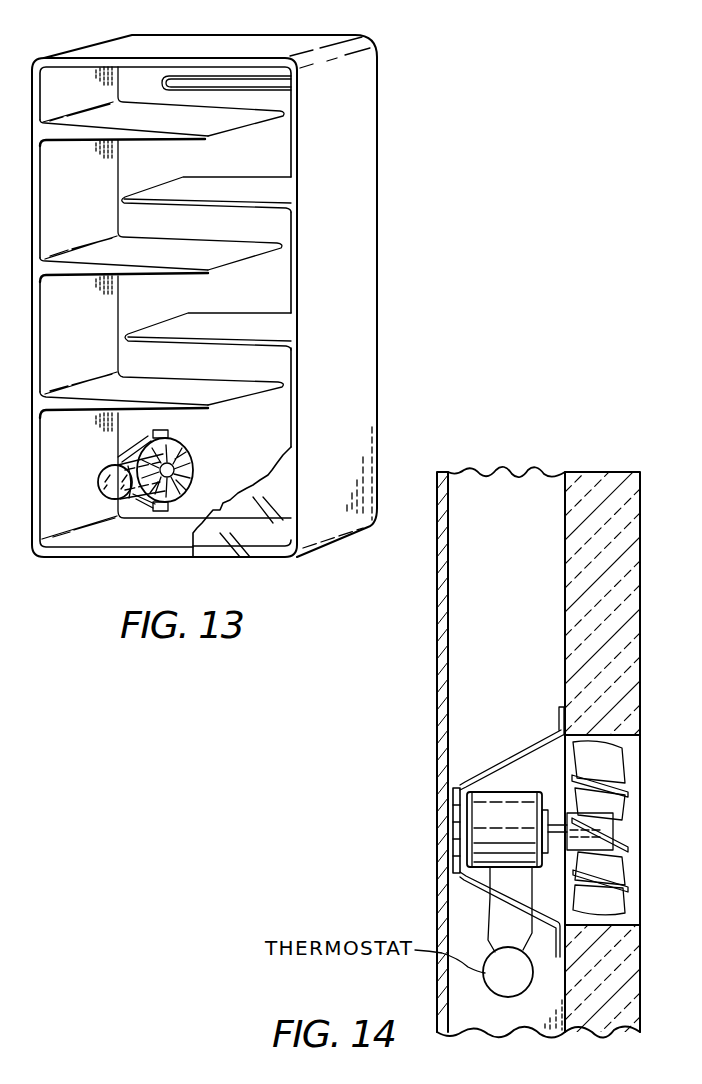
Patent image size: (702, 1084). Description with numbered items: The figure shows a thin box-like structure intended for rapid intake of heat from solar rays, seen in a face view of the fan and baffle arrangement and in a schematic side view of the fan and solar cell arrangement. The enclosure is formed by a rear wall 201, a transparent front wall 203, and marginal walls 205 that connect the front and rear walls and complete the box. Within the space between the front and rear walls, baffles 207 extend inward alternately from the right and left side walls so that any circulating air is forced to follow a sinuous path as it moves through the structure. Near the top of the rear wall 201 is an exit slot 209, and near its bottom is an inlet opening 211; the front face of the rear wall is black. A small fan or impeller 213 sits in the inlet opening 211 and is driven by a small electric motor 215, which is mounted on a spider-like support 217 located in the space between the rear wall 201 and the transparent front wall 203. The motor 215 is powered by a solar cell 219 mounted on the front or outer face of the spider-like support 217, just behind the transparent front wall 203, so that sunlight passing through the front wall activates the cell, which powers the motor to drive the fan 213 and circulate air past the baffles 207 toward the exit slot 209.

In FIG. 13, the rear wall 201 is at (275, 132).
In FIG. 14, the rear wall 201 is at (593, 482).
In FIG. 13, the transparent front wall 203 is at (227, 547).
In FIG. 14, the transparent front wall 203 is at (448, 531).
In FIG. 13, the marginal walls 205 is at (363, 233).
In FIG. 14, the marginal walls 205 is at (490, 487).
In FIG. 13, the baffles 207 is at (199, 187).
In FIG. 13, the exit slot 209 is at (265, 77).
In FIG. 13, the inlet opening 211 is at (191, 464).
In FIG. 14, the inlet opening 211 is at (622, 748).
In FIG. 13, the fan or impeller 213 is at (190, 487).
In FIG. 14, the fan or impeller 213 is at (615, 908).
In FIG. 13, the electric motor 215 is at (162, 440).
In FIG. 14, the electric motor 215 is at (515, 800).
In FIG. 13, the spider-like support 217 is at (122, 455).
In FIG. 14, the spider-like support 217 is at (537, 745).
In FIG. 13, the solar cell 219 is at (104, 486).
In FIG. 14, the solar cell 219 is at (453, 810).